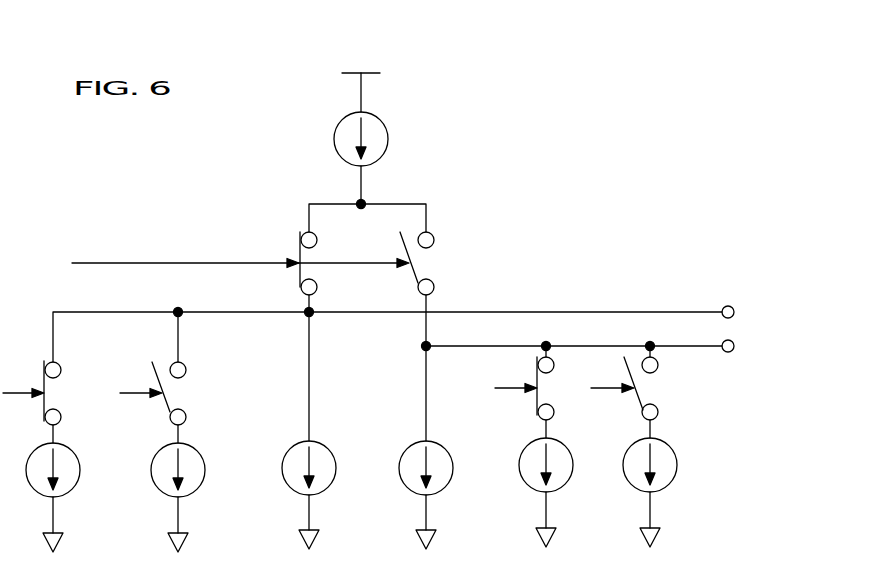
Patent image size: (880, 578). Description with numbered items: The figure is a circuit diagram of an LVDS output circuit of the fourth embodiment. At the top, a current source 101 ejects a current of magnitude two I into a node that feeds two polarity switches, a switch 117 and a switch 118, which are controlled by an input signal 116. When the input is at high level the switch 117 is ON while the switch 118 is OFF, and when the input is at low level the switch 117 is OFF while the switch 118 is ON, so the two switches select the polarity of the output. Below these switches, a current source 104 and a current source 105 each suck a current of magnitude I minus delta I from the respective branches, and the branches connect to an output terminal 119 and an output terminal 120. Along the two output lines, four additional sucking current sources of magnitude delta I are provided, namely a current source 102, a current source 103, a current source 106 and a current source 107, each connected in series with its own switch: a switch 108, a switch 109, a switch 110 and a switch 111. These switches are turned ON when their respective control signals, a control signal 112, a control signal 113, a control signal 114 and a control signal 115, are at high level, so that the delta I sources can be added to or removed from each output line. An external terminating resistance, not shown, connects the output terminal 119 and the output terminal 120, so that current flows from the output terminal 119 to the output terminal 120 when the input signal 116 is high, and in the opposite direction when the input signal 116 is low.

The current source 101 is at (388, 140).
The current source 102 is at (78, 458).
The current source 103 is at (203, 458).
The current source 104 is at (334, 456).
The current source 105 is at (451, 456).
The current source 106 is at (571, 453).
The current source 107 is at (675, 453).
The switch 108 is at (61, 366).
The switch 109 is at (186, 366).
The switch 110 is at (554, 368).
The switch 111 is at (658, 368).
The control signal 112 is at (22, 383).
The control signal 113 is at (138, 383).
The control signal 114 is at (513, 379).
The control signal 115 is at (610, 379).
The input signal 116 is at (219, 264).
The switch 117 is at (317, 240).
The switch 118 is at (434, 240).
The output terminal 119 is at (729, 306).
The output terminal 120 is at (729, 352).